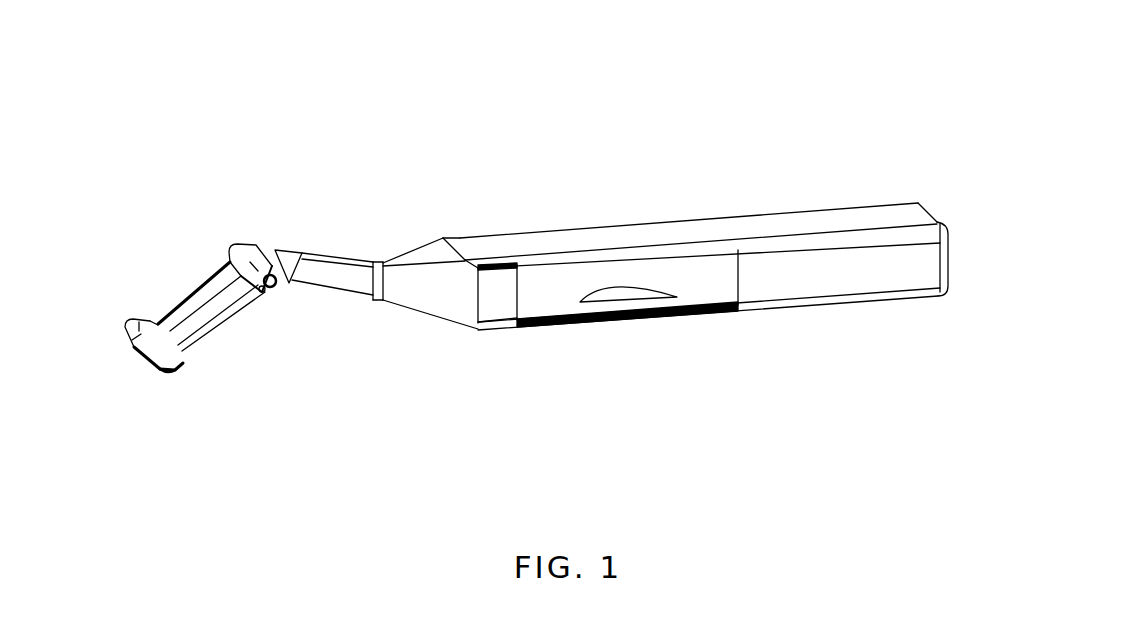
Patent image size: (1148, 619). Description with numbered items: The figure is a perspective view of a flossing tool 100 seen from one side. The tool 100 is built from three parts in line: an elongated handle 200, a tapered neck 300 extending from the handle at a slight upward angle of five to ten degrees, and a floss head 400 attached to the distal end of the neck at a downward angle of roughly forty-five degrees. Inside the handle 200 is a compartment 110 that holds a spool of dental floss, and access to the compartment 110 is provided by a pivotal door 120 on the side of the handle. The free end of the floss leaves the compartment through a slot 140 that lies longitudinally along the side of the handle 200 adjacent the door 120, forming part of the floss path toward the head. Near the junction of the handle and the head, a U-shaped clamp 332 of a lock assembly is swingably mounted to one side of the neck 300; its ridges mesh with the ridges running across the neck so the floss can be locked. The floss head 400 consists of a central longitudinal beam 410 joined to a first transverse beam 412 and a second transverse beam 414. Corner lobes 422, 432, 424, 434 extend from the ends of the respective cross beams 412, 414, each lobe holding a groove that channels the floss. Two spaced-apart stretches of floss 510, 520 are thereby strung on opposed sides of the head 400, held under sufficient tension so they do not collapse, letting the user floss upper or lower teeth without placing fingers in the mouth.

The tool 100 is at (706, 160).
The compartment 110 is at (757, 279).
The pivotal door 120 is at (627, 294).
The slot 140 is at (512, 267).
The handle 200 is at (782, 306).
The neck 300 is at (348, 247).
The U-shaped clamp 332 is at (288, 249).
The floss head 400 is at (158, 390).
The central longitudinal beam 410 is at (190, 325).
The first transverse beam 412 is at (132, 345).
The second transverse beam 414 is at (275, 290).
The corner lobe 422 is at (174, 372).
The corner lobe 424 is at (282, 285).
The corner lobe 432 is at (133, 318).
The corner lobe 434 is at (242, 243).
The first stretch of floss 510 is at (222, 327).
The second stretch of floss 520 is at (188, 278).